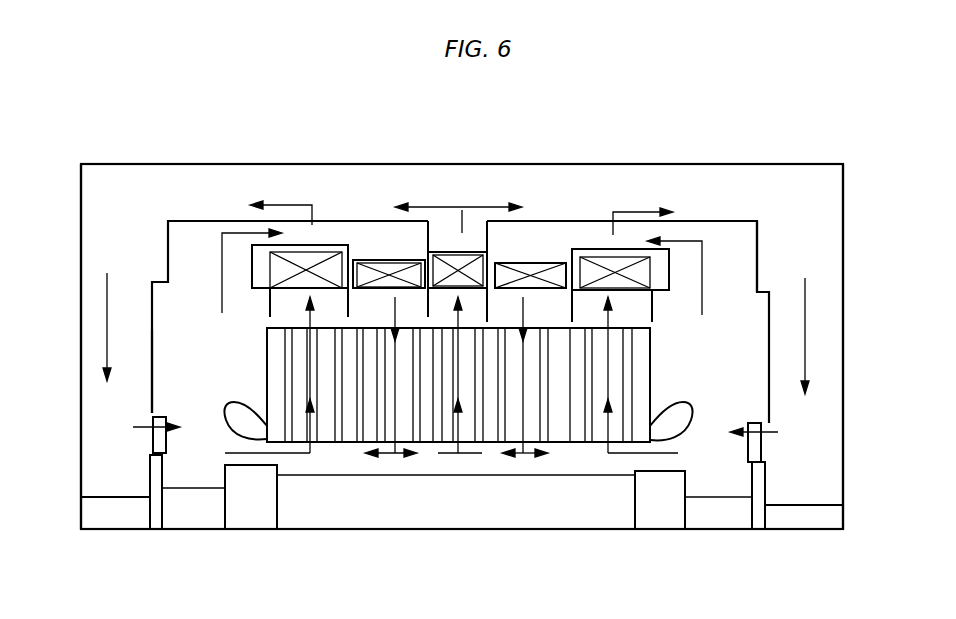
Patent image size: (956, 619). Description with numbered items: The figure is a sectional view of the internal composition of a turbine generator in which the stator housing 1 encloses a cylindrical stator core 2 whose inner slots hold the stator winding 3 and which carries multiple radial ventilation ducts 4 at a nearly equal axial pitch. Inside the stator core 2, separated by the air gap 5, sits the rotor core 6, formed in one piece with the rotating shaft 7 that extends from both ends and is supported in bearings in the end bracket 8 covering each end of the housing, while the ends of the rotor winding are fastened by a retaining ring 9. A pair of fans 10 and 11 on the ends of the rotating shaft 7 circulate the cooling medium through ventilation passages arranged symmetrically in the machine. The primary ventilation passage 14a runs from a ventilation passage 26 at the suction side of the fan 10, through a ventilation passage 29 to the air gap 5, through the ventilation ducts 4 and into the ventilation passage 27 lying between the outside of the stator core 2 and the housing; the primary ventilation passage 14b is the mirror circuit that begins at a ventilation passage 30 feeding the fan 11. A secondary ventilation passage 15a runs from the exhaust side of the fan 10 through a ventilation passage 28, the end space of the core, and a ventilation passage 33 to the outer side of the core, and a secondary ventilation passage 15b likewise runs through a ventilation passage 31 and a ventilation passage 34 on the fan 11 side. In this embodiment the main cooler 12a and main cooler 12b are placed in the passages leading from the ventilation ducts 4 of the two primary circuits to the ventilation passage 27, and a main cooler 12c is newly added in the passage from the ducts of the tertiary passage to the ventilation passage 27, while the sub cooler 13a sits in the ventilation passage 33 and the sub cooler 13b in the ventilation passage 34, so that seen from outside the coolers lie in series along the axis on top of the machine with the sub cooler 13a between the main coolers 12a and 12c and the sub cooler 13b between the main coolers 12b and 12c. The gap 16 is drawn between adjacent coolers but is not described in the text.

The stator housing 1 is at (568, 163).
The stator core 2 is at (620, 355).
The stator winding 3 is at (235, 423).
The ventilation ducts 4 is at (473, 440).
The air gap 5 is at (343, 457).
The rotor core 6 is at (492, 505).
The rotating shaft 7 is at (118, 508).
The end bracket 8 is at (80, 356).
The retaining ring 9 is at (250, 507).
The fan 10 is at (147, 440).
The fan 11 is at (755, 458).
The main cooler 12a is at (263, 275).
The main cooler 12b is at (640, 283).
The main cooler 12c is at (447, 252).
The sub cooler 13a is at (378, 260).
The sub cooler 13b is at (555, 275).
The primary ventilation passage 14a is at (98, 397).
The primary ventilation passage 14b is at (828, 333).
The secondary ventilation passage 15a is at (152, 402).
The secondary ventilation passage 15b is at (737, 252).
The gap 16 is at (473, 230).
The ventilation passage 26 is at (105, 480).
The ventilation passage 27 is at (235, 187).
The ventilation passage 28 is at (158, 350).
The ventilation passage 29 is at (183, 458).
The ventilation passage 30 is at (827, 430).
The ventilation passage 31 is at (722, 378).
The ventilation passage 33 is at (329, 235).
The ventilation passage 34 is at (535, 237).